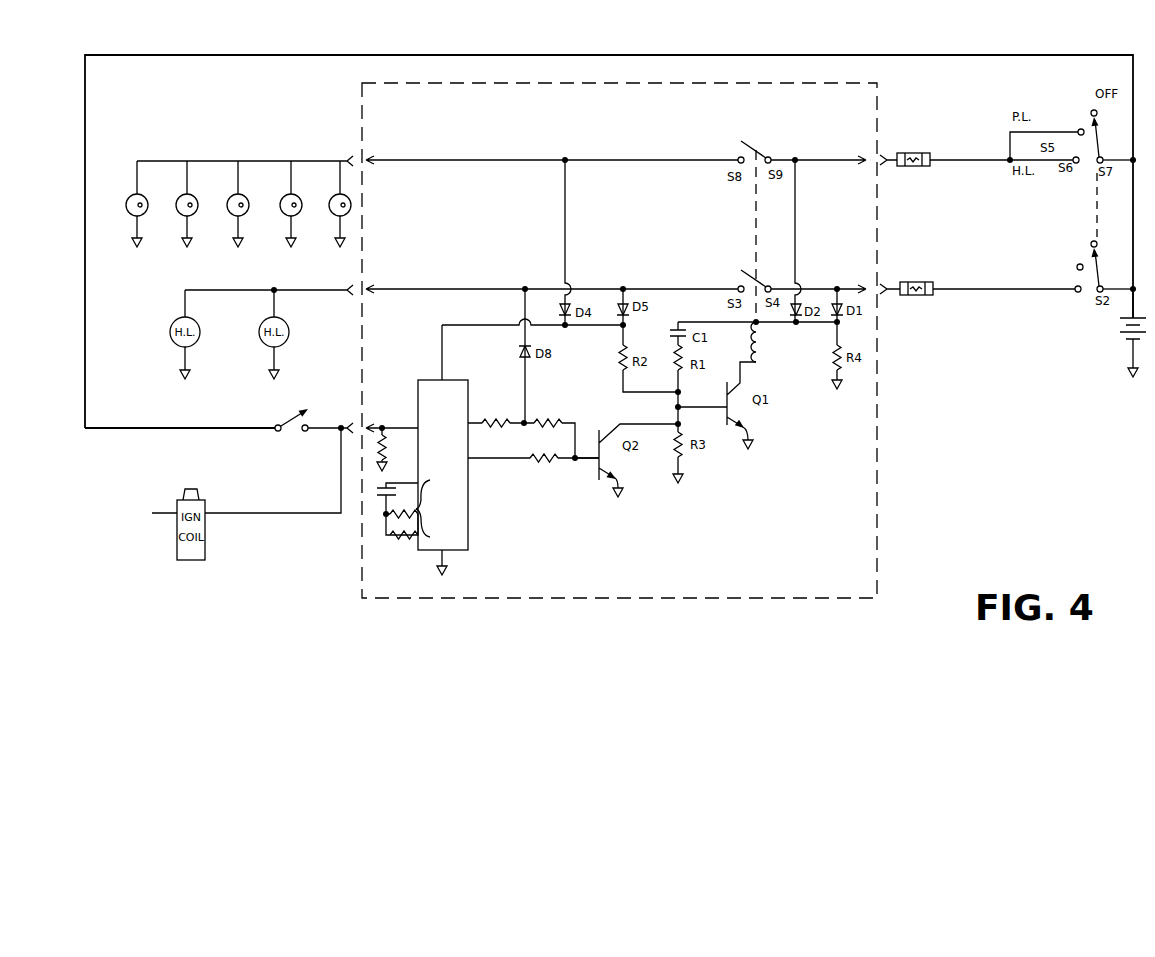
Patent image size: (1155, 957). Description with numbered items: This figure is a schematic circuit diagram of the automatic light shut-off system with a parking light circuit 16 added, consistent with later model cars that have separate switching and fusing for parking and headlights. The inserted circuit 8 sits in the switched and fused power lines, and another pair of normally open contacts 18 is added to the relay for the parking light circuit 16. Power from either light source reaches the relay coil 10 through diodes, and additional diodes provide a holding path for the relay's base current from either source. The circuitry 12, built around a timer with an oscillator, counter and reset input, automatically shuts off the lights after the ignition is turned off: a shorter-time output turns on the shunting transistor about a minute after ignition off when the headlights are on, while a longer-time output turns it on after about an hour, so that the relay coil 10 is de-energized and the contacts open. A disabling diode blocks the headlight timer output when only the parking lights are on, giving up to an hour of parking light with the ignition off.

The inserted circuit 8 is at (778, 427).
The relay coil 10 is at (766, 343).
The circuitry 12 is at (513, 478).
The parking light circuit 16 is at (273, 146).
The pair of normally open contacts 18 is at (764, 157).